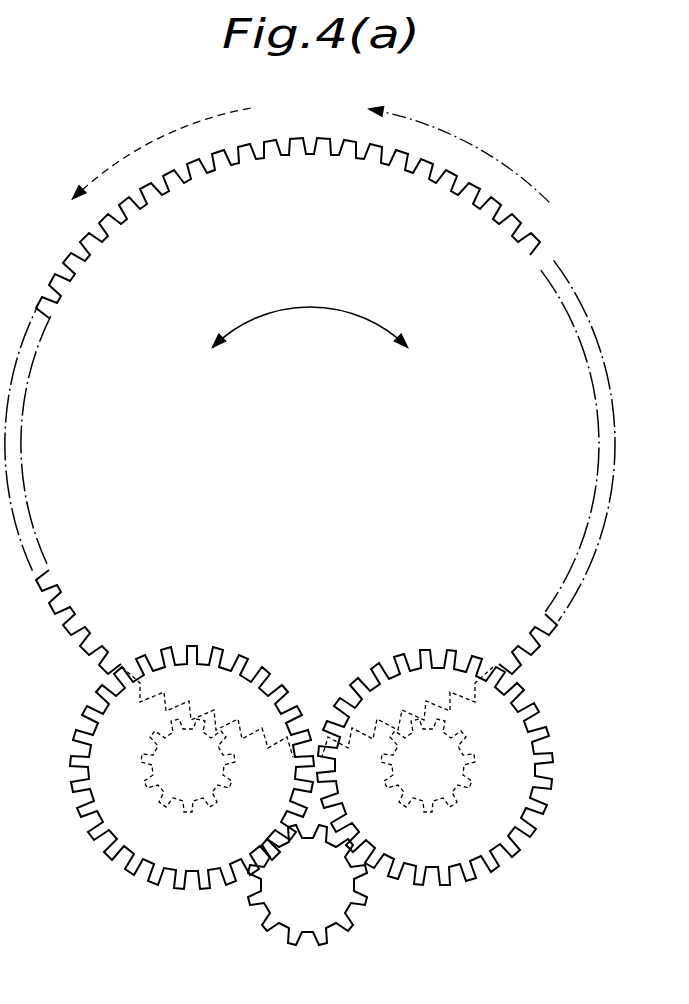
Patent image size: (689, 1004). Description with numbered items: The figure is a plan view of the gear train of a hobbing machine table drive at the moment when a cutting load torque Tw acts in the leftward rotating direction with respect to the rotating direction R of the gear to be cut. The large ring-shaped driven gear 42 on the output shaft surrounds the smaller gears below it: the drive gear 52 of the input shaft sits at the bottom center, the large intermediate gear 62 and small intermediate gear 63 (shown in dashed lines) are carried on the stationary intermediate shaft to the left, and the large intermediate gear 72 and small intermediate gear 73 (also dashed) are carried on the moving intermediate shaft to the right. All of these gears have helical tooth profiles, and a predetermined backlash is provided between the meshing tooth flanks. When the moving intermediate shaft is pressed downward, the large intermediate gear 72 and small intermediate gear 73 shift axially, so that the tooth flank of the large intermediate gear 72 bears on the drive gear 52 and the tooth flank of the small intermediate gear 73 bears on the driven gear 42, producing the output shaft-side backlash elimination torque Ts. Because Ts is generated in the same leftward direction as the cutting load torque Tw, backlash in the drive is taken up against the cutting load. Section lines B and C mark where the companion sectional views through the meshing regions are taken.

The driven gear 42 is at (552, 260).
The large intermediate gear 62 is at (83, 833).
The small intermediate gear 63 is at (167, 806).
The large intermediate gear 72 is at (535, 810).
The small intermediate gear 73 is at (462, 797).
The drive gear 52 is at (250, 902).
The cutting load torque Tw is at (182, 147).
The output shaft-side backlash elimination torque Ts is at (476, 171).
The rotating direction of gear to be cut R is at (309, 311).
The section line B- B is at (365, 755).
The section line C- C is at (320, 807).